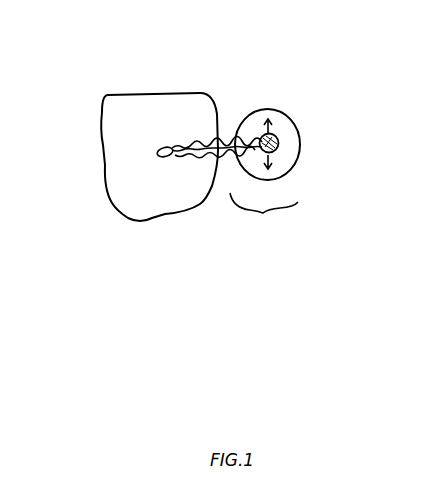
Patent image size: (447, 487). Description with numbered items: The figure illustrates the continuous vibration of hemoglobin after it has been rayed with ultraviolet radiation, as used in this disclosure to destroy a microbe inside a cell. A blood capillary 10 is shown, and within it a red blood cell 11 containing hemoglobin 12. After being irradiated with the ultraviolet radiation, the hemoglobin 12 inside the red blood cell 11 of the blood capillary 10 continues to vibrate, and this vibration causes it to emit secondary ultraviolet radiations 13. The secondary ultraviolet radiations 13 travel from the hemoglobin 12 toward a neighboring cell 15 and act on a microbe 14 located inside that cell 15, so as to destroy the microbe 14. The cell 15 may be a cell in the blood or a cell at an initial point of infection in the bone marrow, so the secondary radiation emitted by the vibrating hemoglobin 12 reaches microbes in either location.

The blood capillary 10 is at (263, 214).
The red blood cell 11 is at (300, 156).
The hemoglobin 12 is at (281, 138).
The secondary ultraviolet radiations 13 is at (224, 146).
The microbe 14 is at (168, 143).
The cell 15 is at (110, 203).